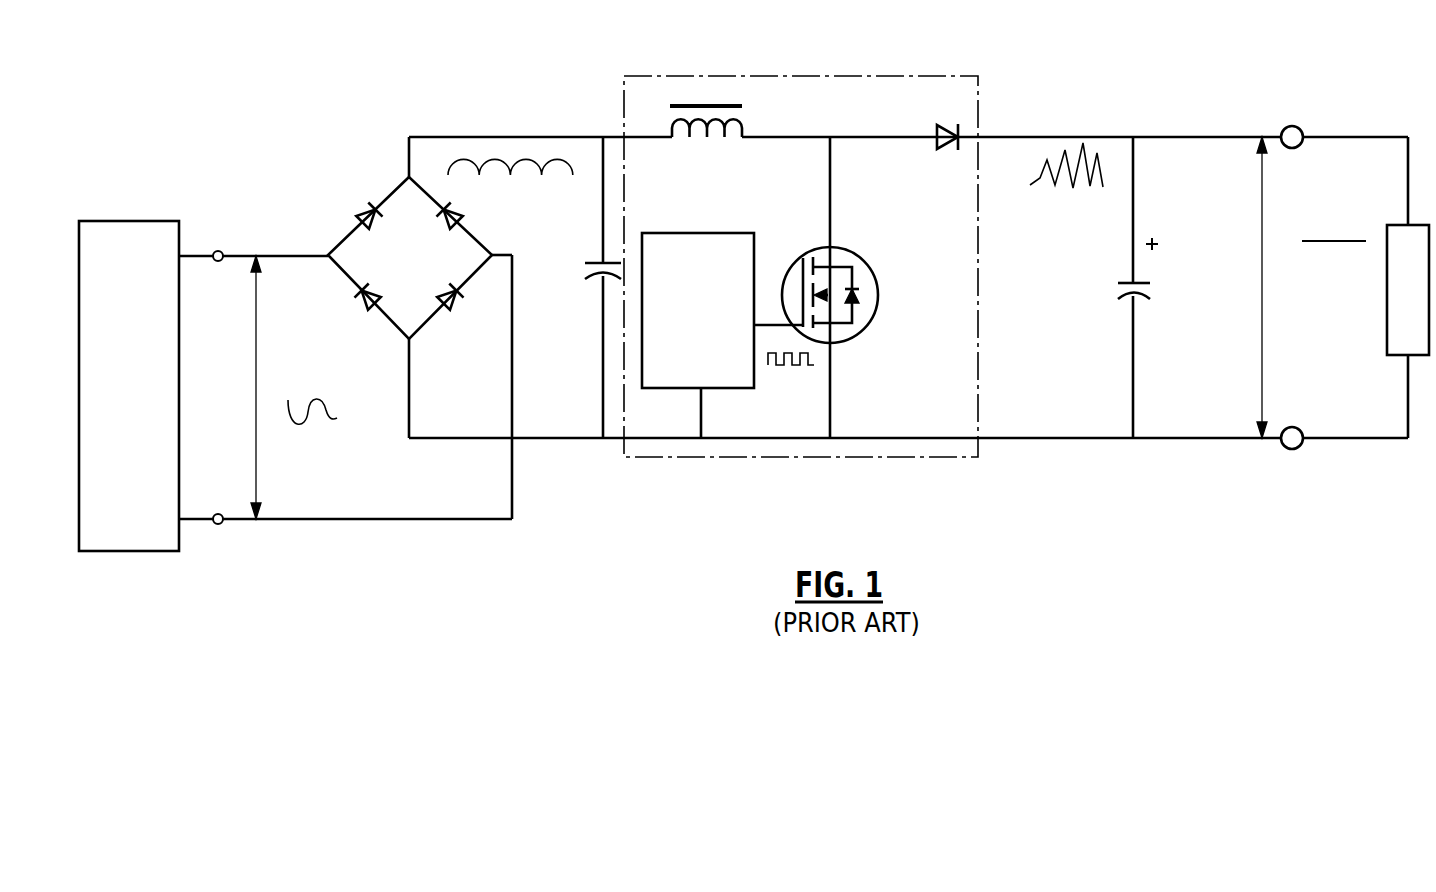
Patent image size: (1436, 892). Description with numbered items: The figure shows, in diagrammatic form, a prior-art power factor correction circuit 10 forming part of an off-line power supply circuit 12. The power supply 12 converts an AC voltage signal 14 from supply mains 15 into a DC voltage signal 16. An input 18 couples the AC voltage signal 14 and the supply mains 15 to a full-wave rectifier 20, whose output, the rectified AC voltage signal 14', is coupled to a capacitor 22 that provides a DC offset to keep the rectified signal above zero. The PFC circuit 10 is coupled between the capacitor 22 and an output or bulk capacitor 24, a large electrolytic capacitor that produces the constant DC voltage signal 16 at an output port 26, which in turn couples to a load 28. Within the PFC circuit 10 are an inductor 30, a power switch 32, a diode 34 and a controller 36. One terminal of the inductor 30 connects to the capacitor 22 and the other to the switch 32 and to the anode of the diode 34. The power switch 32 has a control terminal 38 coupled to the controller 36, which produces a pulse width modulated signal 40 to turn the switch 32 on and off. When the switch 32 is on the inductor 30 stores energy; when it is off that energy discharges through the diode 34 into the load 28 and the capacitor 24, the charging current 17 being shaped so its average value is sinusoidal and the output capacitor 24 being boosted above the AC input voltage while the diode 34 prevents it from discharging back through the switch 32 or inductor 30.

The power factor correction circuit 10 is at (978, 118).
The power supply circuit 12 is at (1163, 60).
The AC voltage signal 14 is at (295, 387).
The rectified AC voltage signal 14' is at (510, 156).
The supply mains 15 is at (134, 221).
The DC voltage signal 16 is at (1323, 240).
The charging current 17 is at (1030, 185).
The input 18 is at (219, 250).
The full-wave rectifier 20 is at (392, 192).
The capacitor 22 is at (598, 280).
The output capacitor 24 is at (1142, 298).
The output port 26 is at (1292, 125).
The load 28 is at (1390, 225).
The inductor 30 is at (745, 127).
The power switch 32 is at (855, 258).
The diode 34 is at (940, 124).
The controller 36 is at (682, 232).
The control terminal 38 is at (770, 322).
The pulse width modulated signal 40 is at (808, 368).